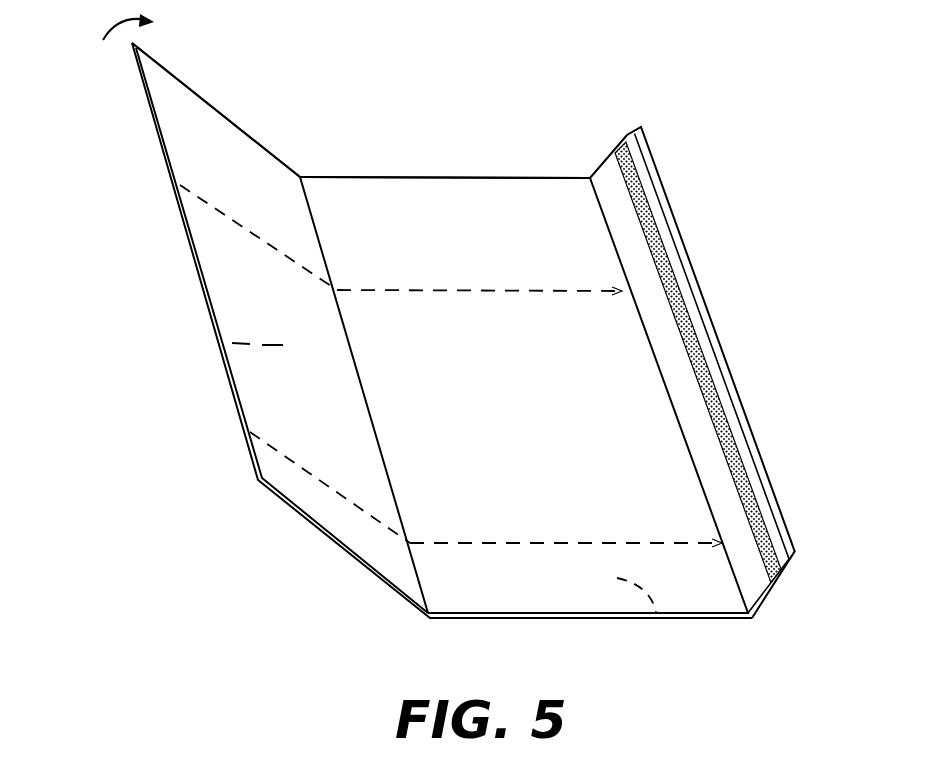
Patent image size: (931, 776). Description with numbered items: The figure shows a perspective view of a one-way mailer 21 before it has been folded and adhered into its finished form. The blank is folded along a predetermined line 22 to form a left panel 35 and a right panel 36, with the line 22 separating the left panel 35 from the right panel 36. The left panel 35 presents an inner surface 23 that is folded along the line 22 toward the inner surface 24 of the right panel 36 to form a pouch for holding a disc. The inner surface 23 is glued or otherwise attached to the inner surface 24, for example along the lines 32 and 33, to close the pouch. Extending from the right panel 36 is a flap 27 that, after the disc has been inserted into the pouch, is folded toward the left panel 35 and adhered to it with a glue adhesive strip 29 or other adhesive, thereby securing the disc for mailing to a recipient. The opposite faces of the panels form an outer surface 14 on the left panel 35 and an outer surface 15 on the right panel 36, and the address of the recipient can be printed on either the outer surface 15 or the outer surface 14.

The outer surface of left panel 14 is at (213, 342).
The outer surface of right panel 15 is at (658, 622).
The blank 21 is at (478, 108).
The predetermined line 22 is at (403, 515).
The inner surface of left panel 23 is at (442, 330).
The inner surface of right panel 24 is at (524, 395).
The flap 27 is at (620, 128).
The glue adhesive strip 29 is at (700, 367).
The line 32 is at (347, 497).
The line 33 is at (260, 240).
The left panel 35 is at (220, 107).
The right panel 36 is at (375, 177).